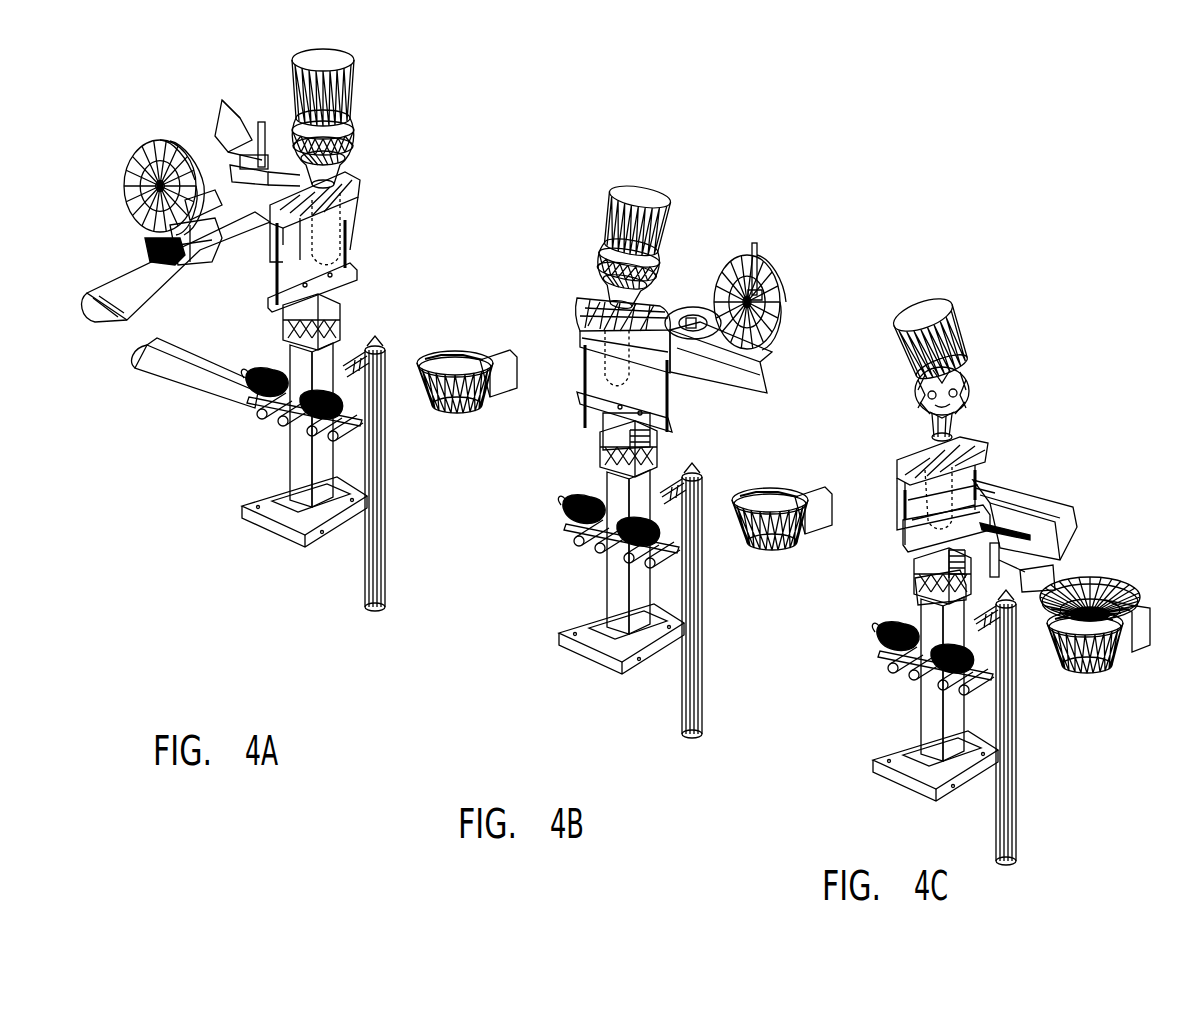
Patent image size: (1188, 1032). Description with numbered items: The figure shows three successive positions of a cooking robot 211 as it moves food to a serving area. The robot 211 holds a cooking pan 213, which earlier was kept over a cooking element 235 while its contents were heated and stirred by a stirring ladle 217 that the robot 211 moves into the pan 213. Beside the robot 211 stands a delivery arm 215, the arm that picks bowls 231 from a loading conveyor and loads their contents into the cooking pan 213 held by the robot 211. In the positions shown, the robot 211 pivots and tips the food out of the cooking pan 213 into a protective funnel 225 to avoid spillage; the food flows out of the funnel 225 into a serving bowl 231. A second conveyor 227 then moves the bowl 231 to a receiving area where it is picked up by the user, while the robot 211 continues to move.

In FIG. 4A, the robot 211 is at (348, 166).
In FIG. 4B, the robot 211 is at (678, 228).
In FIG. 4C, the robot 211 is at (975, 342).
In FIG. 4A, the cooking pan 213 is at (132, 168).
In FIG. 4C, the cooking pan 213 is at (1100, 580).
In FIG. 4A, the delivery arm 215 is at (363, 388).
In FIG. 4A, the stirring ladle 217 is at (212, 128).
In FIG. 4B, the stirring ladle 217 is at (762, 247).
In FIG. 4C, the stirring ladle 217 is at (1027, 513).
In FIG. 4A, the protective funnel 225 is at (168, 243).
In FIG. 4A, the second conveyor 227 is at (142, 288).
In FIG. 4A, the bowl 231 is at (248, 398).
In FIG. 4A, the cooking element 235 is at (505, 388).
In FIG. 4B, the cooking element 235 is at (822, 480).
In FIG. 4C, the cooking element 235 is at (1143, 630).